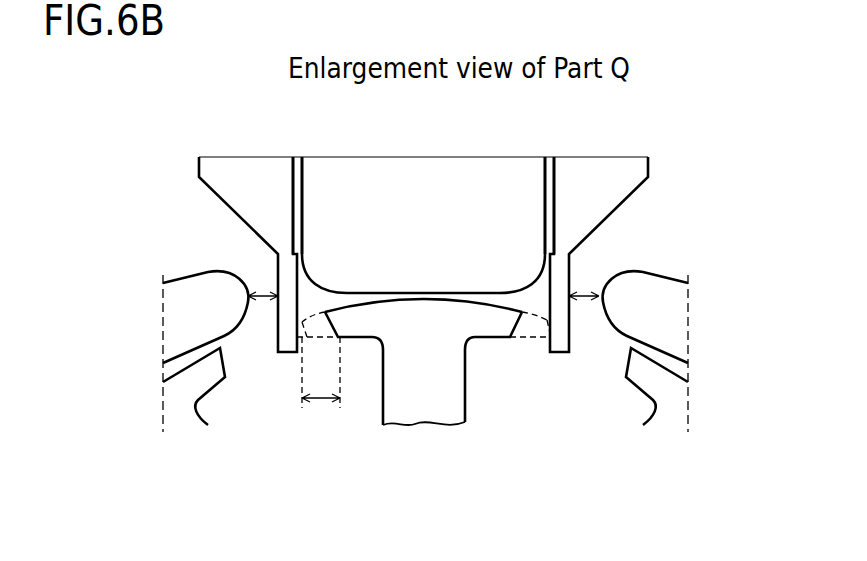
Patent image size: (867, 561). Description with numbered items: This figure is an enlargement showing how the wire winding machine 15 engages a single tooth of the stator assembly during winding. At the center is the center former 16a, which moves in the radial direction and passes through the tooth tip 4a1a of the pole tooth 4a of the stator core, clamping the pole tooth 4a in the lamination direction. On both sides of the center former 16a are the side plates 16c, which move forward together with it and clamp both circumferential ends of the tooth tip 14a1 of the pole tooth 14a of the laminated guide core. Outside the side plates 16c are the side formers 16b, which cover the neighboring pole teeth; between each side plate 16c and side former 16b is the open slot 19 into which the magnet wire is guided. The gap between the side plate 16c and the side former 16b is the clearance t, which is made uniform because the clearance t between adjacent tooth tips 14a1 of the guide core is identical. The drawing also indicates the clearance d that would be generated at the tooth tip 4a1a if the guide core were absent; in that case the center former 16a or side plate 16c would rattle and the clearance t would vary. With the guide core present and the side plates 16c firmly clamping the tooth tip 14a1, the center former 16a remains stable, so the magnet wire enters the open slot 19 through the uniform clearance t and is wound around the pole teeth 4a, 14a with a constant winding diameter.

The wire winding machine 15 is at (194, 157).
The center former 16a is at (450, 177).
The side former 16b is at (425, 351).
The side plate 16c is at (275, 268).
The open slot 19 is at (255, 397).
The tooth tip 4a1a is at (510, 337).
The tooth tip 14a1 is at (548, 338).
The pole tooth 4a is at (470, 403).
The pole tooth 14a is at (467, 407).
The clearance t is at (263, 290).
The clearance d is at (321, 415).